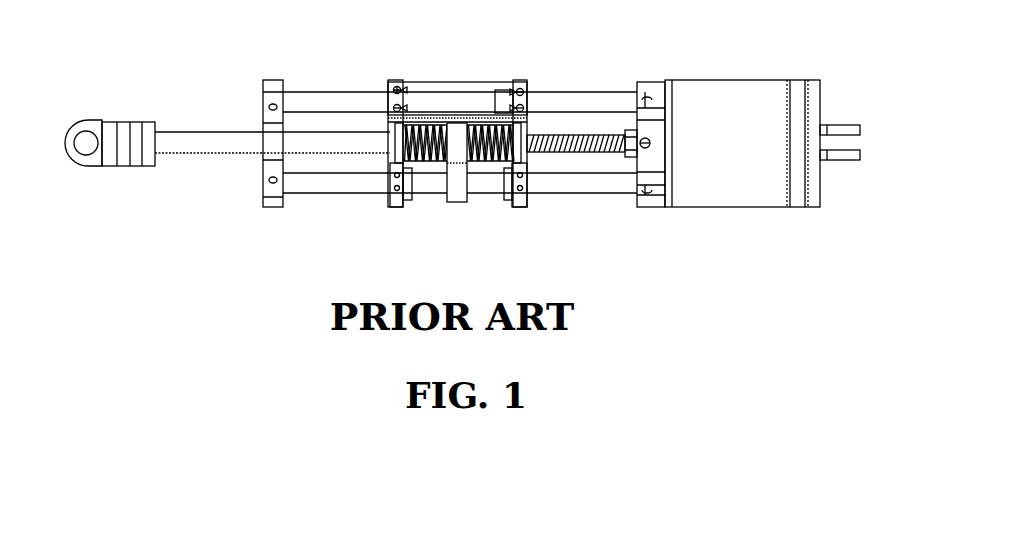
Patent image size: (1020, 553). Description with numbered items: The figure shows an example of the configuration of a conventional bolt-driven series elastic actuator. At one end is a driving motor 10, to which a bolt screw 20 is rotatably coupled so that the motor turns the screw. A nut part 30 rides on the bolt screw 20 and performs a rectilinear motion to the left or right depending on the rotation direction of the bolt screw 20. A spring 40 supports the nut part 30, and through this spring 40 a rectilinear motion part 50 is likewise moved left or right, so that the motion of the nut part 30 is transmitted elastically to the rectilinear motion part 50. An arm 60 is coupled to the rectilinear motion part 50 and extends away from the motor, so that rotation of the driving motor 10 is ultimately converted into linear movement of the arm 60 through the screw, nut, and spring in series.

The driving motor 10 is at (720, 93).
The bolt screw 20 is at (593, 153).
The nut part 30 is at (453, 203).
The spring 40 is at (500, 163).
The rectilinear motion part 50 is at (438, 88).
The arm 60 is at (198, 142).